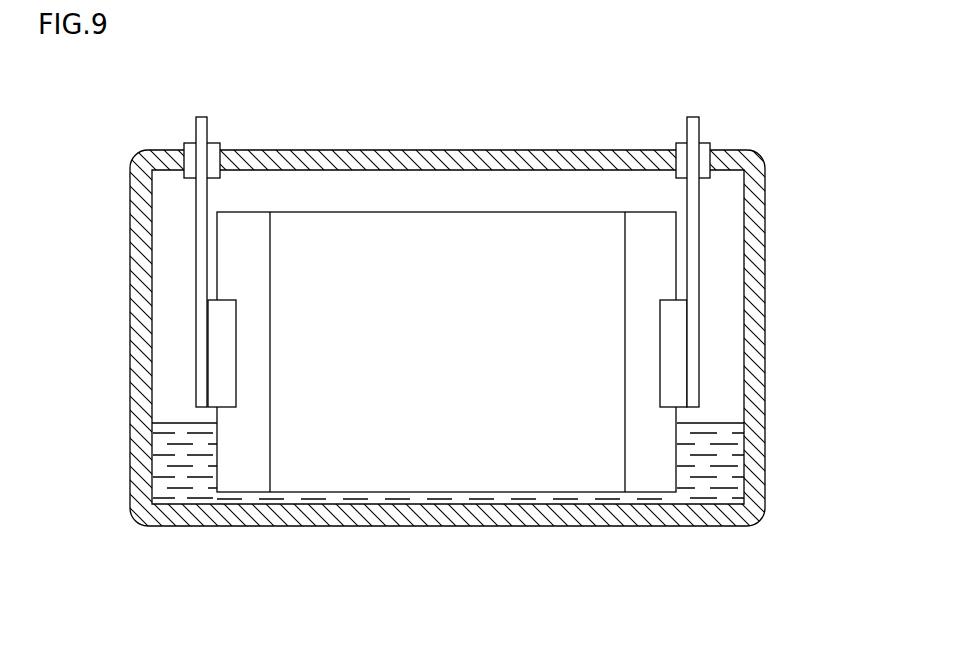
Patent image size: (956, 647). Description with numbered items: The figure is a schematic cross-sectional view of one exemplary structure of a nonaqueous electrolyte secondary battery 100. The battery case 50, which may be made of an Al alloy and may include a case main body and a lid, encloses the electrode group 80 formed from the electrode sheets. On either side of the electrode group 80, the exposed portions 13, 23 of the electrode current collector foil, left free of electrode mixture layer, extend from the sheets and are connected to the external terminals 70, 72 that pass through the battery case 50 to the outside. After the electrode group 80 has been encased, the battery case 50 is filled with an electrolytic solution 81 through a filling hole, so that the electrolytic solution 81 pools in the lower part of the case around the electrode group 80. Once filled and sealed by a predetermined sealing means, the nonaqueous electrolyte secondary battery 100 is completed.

The nonaqueous electrolyte secondary battery 100 is at (765, 83).
The battery case 50 is at (505, 151).
The electrode group 80 is at (402, 302).
The electrolytic solution 81 is at (715, 477).
The exposed portion 23 is at (242, 460).
The exposed portion 13 is at (656, 458).
The external terminal 72 is at (200, 115).
The external terminal 70 is at (691, 115).